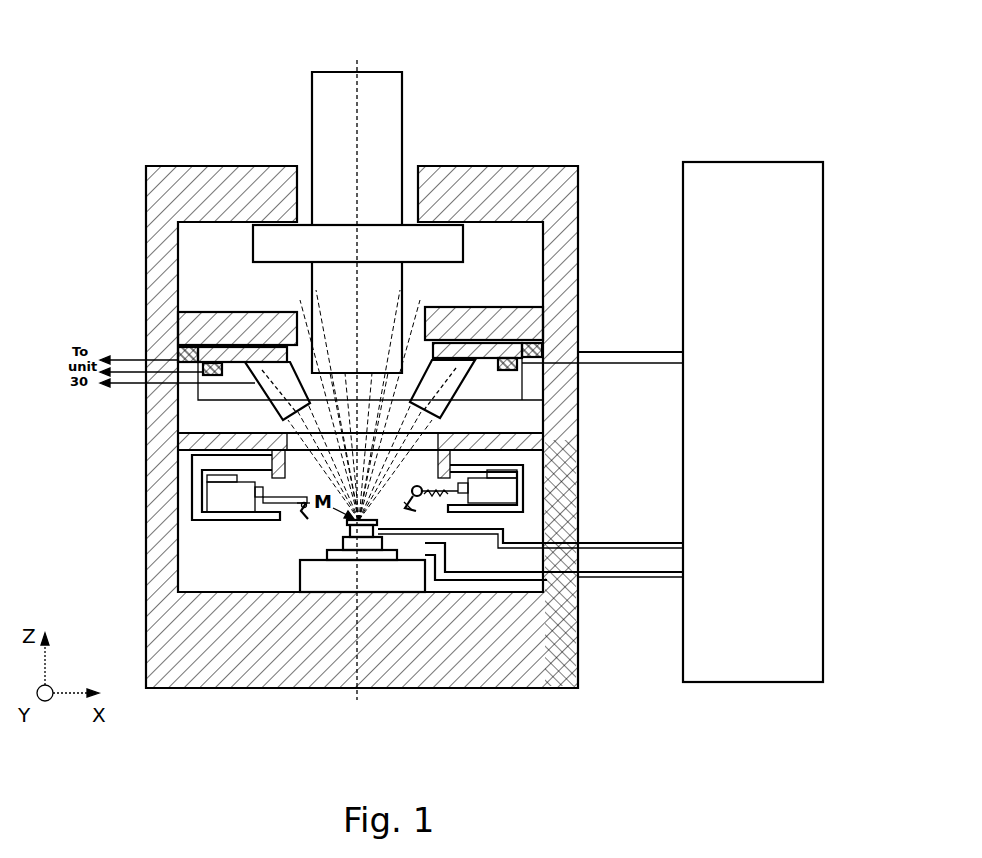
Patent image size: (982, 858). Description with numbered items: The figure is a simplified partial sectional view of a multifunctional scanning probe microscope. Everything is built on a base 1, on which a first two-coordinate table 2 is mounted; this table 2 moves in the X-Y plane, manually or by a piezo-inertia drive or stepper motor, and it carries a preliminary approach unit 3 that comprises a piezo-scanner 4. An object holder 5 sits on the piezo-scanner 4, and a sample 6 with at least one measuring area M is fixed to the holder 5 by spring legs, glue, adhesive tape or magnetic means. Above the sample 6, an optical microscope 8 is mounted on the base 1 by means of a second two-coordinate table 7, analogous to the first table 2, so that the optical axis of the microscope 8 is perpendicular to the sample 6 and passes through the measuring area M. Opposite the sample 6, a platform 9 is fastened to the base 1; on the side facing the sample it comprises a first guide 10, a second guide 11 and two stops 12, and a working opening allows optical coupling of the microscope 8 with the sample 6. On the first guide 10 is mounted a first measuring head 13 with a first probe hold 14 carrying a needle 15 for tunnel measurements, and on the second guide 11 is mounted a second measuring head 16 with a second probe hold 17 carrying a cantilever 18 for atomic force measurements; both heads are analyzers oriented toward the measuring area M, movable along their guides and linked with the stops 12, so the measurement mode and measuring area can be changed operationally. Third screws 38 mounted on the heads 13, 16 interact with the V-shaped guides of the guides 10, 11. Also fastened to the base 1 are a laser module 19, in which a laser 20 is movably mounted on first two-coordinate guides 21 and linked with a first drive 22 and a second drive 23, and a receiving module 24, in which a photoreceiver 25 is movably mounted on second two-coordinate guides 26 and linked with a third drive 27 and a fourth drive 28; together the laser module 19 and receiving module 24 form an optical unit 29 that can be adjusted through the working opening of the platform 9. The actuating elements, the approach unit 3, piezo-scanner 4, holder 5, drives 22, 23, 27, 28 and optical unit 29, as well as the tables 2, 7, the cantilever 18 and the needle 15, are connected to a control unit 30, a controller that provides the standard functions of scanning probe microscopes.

The base 1 is at (417, 647).
The first two-coordinate table 2 is at (358, 557).
The preliminary approach unit 3 is at (342, 580).
The piezo-scanner 4 is at (378, 540).
The object holder 5 is at (357, 530).
The sample 6 is at (549, 690).
The second two-coordinate table 7 is at (435, 243).
The optical microscope 8 is at (373, 289).
The platform 9 is at (488, 457).
The first guide 10 is at (235, 462).
The second guide 11 is at (490, 493).
The stops 12 is at (300, 512).
The first measuring head 13 is at (233, 497).
The first probe hold 14 is at (245, 520).
The needle 15 is at (302, 518).
The second measuring head 16 is at (420, 493).
The second probe hold 17 is at (412, 505).
The cantilever 18 is at (470, 536).
The laser module 19 is at (236, 325).
The laser 20 is at (265, 382).
The first two-coordinate guides 21 is at (245, 356).
The first drive 22 is at (212, 368).
The second drive 23 is at (181, 356).
The receiving module 24 is at (460, 322).
The photoreceiver 25 is at (457, 378).
The second two-coordinate guides 26 is at (477, 355).
The third drive 27 is at (508, 363).
The fourth drive 28 is at (530, 350).
The optical unit 29 is at (525, 440).
The control unit 30 is at (723, 208).
The third screws 38 is at (500, 550).